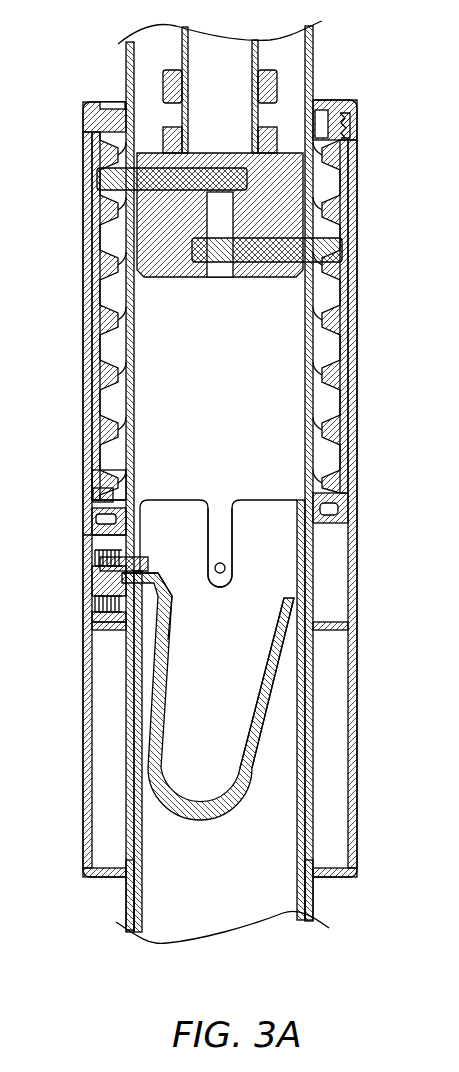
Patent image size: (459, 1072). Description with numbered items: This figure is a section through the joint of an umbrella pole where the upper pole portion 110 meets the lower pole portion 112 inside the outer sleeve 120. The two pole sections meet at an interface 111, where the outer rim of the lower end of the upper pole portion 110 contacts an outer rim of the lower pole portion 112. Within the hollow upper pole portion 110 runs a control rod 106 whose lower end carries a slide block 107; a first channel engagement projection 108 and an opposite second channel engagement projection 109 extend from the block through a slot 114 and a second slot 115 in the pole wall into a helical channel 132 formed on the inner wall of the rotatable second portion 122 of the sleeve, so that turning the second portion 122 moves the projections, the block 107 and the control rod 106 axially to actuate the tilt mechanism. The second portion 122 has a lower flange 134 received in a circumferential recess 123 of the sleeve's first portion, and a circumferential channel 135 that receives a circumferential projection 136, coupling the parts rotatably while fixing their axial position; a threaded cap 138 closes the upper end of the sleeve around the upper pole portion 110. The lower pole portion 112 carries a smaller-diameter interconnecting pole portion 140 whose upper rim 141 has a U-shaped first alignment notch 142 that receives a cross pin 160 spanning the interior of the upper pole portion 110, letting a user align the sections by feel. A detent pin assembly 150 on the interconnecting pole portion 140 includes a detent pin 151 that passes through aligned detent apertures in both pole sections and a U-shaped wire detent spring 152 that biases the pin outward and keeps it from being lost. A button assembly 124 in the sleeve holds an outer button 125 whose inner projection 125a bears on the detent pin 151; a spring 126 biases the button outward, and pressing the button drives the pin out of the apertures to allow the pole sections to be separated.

The control rod 106 is at (258, 52).
The slide block 107 is at (290, 175).
The first channel engagement projection 108 is at (152, 178).
The second channel engagement projection 109 is at (330, 250).
The upper pole portion 110 is at (125, 78).
The interface 111 is at (124, 888).
The lower pole portion 112 is at (316, 900).
The slot 114 is at (126, 307).
The second slot 115 is at (336, 300).
The outer sleeve 120 is at (76, 193).
The second portion 122 is at (92, 225).
The circumferential recess 123 is at (346, 508).
The button assembly 124 is at (80, 598).
The outer button 125 is at (96, 606).
The inner projection 125a is at (104, 568).
The spring 126 is at (104, 614).
The helical channel 132 is at (336, 346).
The lower flange 134 is at (96, 520).
The circumferential channel 135 is at (110, 488).
The circumferential projection 136 is at (110, 497).
The cap 138 is at (352, 108).
The interconnecting pole portion 140 is at (228, 568).
The upper rim 141 is at (345, 472).
The first alignment notch 142 is at (235, 540).
The detent pin assembly 150 is at (304, 620).
The detent pin 151 is at (178, 630).
The detent spring 152 is at (266, 705).
The cross pin 160 is at (190, 611).